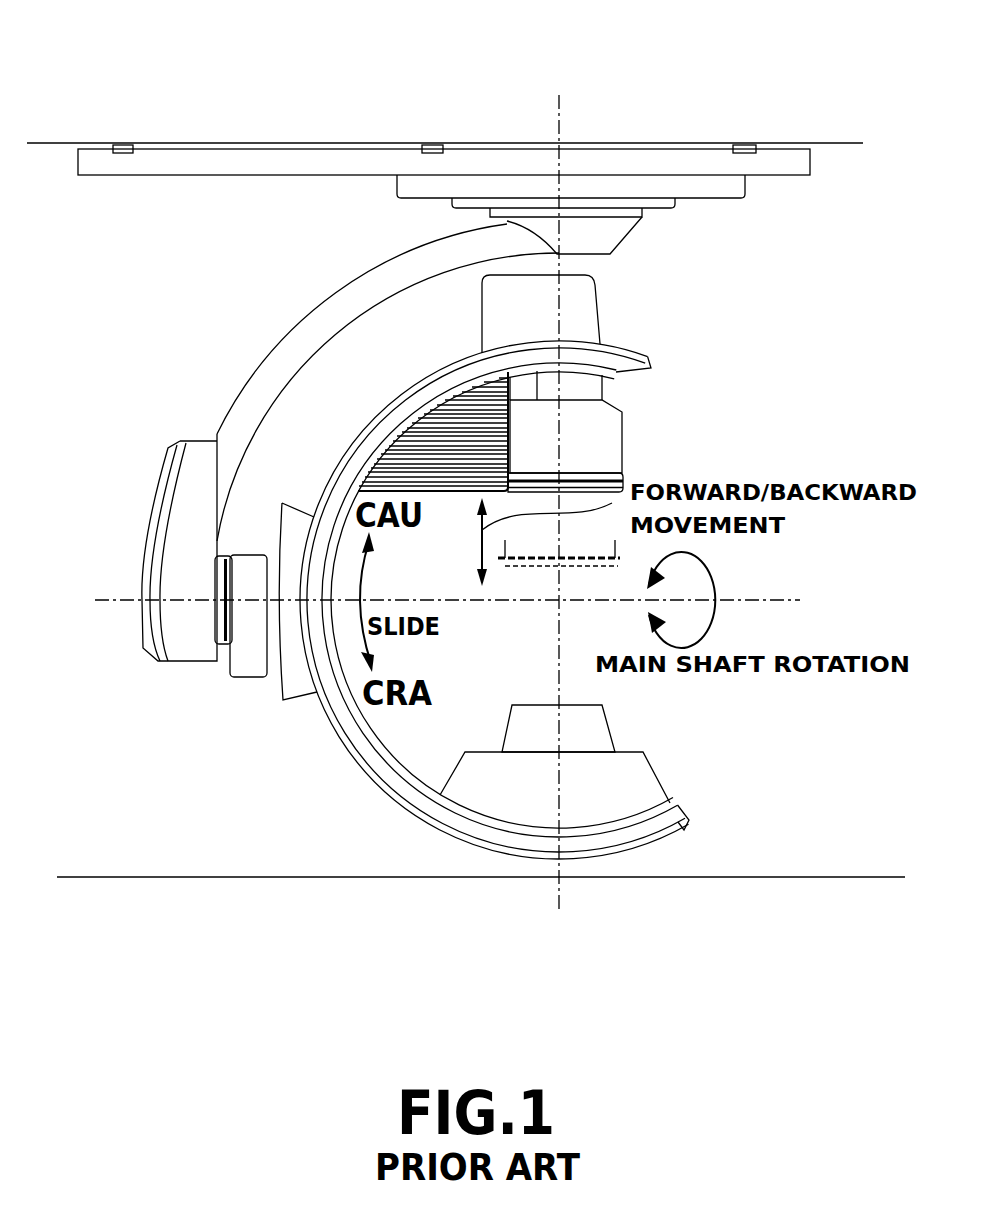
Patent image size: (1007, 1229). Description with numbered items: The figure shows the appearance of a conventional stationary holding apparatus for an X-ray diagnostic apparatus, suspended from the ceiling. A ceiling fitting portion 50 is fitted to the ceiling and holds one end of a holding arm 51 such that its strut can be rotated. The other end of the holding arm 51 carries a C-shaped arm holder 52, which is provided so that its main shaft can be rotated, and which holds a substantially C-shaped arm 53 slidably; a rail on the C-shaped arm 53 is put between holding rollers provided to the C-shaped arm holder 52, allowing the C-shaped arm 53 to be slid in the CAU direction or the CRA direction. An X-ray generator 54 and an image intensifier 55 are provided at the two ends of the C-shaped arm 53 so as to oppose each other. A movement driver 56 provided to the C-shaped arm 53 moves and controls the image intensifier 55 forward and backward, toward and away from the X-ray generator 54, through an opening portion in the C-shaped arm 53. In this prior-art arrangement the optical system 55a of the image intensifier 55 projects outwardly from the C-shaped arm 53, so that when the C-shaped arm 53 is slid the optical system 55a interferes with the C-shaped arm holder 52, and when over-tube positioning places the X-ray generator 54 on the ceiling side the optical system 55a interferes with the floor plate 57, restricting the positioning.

The ceiling fitting portion 50 is at (603, 153).
The holding arm 51 is at (278, 352).
The C-shaped arm holder 52 is at (257, 662).
The C-shaped arm 53 is at (650, 357).
The X-ray generator 54 is at (648, 760).
The image intensifier 55 is at (618, 450).
The optical system 55a is at (603, 303).
The movement driver 56 is at (448, 473).
The floor plate 57 is at (790, 877).